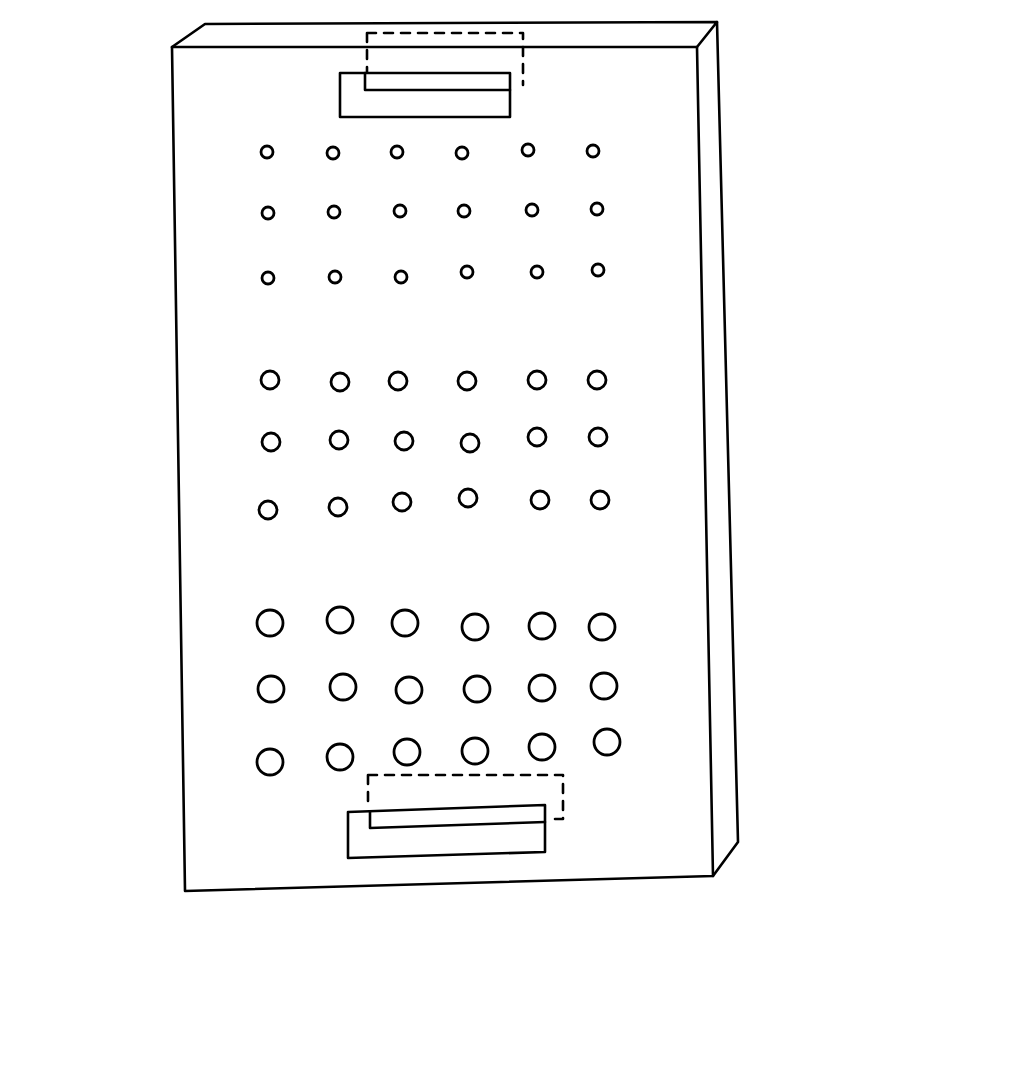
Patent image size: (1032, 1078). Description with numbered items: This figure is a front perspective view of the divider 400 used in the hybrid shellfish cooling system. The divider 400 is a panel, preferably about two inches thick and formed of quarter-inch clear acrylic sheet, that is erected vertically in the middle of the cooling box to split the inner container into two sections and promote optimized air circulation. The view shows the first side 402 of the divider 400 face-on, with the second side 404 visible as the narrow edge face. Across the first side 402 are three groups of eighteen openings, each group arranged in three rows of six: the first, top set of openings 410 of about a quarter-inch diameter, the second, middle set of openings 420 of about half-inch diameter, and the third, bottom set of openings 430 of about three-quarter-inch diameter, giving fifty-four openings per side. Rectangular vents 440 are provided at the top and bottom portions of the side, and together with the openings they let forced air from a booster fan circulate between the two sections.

The divider 400 is at (790, 232).
The first side 402 is at (636, 884).
The second side 404 is at (732, 745).
The first, top set of openings 410 is at (155, 287).
The second, middle set of openings 420 is at (165, 355).
The third, bottom set of openings 430 is at (165, 612).
The rectangular vents 440 is at (340, 88).